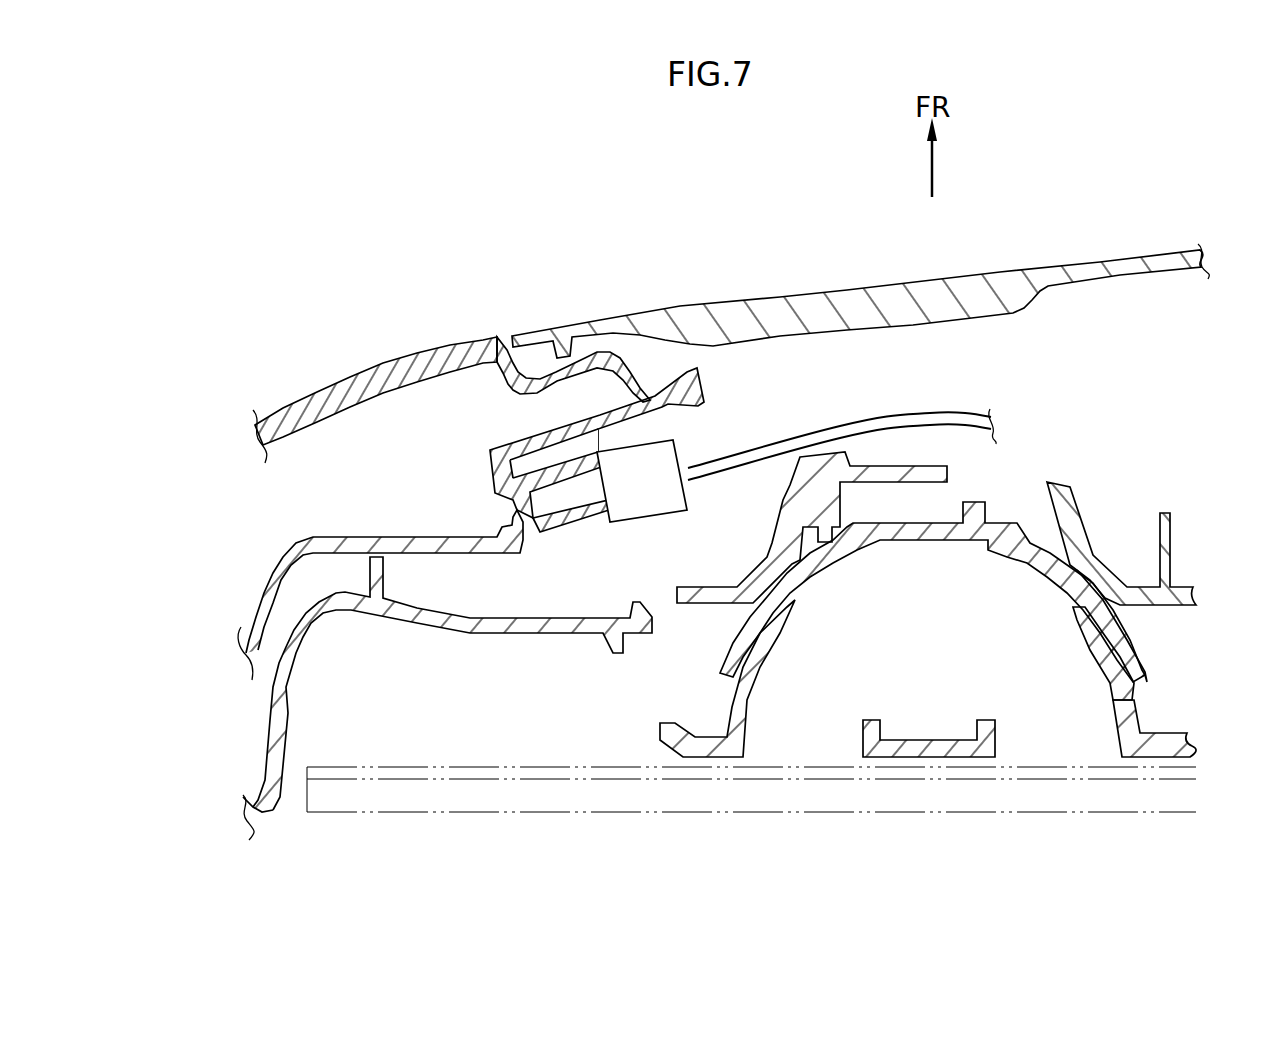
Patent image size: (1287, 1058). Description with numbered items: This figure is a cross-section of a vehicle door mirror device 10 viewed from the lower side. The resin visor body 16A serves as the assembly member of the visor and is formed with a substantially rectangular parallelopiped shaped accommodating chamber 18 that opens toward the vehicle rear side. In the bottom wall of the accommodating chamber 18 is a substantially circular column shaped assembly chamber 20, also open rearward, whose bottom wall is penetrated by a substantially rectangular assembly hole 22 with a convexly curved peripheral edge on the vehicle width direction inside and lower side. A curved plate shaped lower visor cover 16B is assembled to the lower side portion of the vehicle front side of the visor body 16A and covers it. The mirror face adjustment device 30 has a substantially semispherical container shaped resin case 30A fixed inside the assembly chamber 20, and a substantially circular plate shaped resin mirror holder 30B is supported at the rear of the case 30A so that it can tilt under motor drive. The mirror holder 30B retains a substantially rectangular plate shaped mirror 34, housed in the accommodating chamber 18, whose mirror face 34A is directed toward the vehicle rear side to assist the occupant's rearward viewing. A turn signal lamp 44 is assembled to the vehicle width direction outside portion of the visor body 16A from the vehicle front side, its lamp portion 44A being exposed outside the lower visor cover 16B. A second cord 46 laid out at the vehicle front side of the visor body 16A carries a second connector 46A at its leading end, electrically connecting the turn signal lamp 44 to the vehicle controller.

The vehicle body structure 10 is at (302, 270).
The visor body 16A is at (386, 703).
The lower visor cover 16B is at (990, 272).
The accommodating chamber 18 is at (280, 812).
The assembly chamber 20 is at (1063, 524).
The assembly hole 22 is at (948, 472).
The mirror face adjustment device 30 is at (931, 638).
The case 30A is at (1142, 652).
The mirror holder 30B is at (1193, 757).
The mirror 34 is at (751, 826).
The mirror face 34A is at (670, 780).
The turn signal lamp 44 is at (518, 424).
The lamp portion 44A is at (346, 380).
The second cord 46 is at (796, 435).
The second connector 46A is at (688, 452).